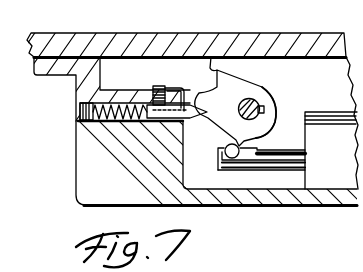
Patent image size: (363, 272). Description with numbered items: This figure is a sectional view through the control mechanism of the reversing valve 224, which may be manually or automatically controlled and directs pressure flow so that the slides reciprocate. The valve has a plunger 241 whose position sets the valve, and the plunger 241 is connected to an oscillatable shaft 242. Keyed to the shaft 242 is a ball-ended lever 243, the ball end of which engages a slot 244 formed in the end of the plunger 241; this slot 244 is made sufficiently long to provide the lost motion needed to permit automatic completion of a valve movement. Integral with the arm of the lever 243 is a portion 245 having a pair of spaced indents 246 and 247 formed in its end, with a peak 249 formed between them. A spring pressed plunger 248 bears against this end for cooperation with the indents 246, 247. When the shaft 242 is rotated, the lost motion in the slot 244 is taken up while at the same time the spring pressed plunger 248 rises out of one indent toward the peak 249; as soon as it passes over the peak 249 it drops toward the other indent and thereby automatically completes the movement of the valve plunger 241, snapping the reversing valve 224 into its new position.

The indent 247 is at (213, 57).
The peak 249 is at (195, 90).
The spring pressed plunger 248 is at (183, 88).
The portion 245 is at (233, 90).
The oscillatable shaft 242 is at (257, 99).
The slot 244 is at (280, 142).
The indent 246 is at (226, 149).
The ball-ended lever 243 is at (220, 157).
The plunger 241 is at (272, 160).
The reversing valve 224 is at (334, 176).